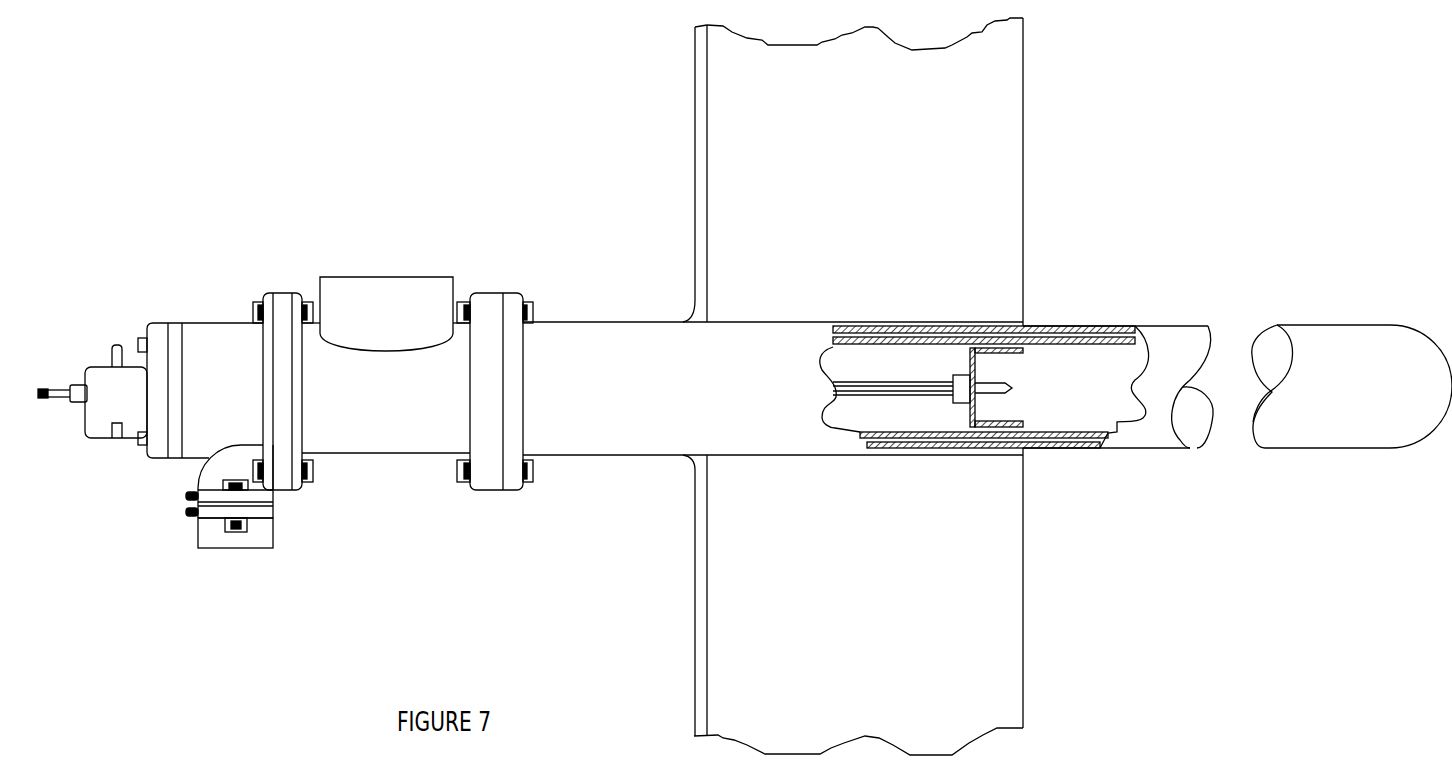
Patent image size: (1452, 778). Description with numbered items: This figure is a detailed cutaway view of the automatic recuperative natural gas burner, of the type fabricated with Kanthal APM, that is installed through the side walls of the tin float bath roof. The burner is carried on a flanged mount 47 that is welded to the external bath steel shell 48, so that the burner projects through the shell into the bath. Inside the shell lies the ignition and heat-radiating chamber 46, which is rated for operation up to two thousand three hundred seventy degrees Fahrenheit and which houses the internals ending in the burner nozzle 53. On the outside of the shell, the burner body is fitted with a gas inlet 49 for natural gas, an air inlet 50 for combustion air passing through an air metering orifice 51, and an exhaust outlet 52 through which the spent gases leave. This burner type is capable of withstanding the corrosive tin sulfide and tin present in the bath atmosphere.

The ignition and heat-radiating chamber 46 is at (1040, 327).
The flanged mount 47 is at (573, 322).
The external bath steel shell 48 is at (695, 140).
The gas inlet 49 is at (117, 435).
The air inlet 50 is at (237, 548).
The air metering orifice 51 is at (273, 512).
The exhaust outlet 52 is at (390, 277).
The burner nozzle 53 is at (1020, 400).